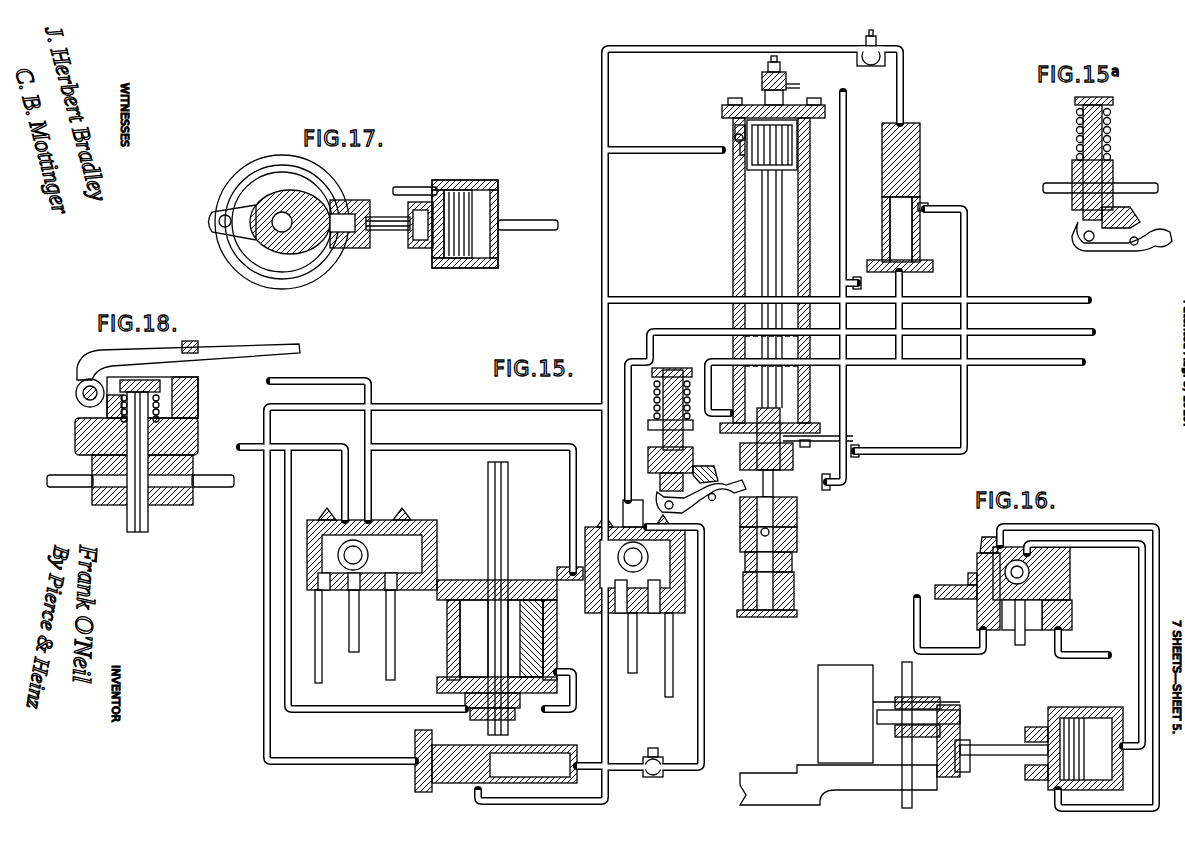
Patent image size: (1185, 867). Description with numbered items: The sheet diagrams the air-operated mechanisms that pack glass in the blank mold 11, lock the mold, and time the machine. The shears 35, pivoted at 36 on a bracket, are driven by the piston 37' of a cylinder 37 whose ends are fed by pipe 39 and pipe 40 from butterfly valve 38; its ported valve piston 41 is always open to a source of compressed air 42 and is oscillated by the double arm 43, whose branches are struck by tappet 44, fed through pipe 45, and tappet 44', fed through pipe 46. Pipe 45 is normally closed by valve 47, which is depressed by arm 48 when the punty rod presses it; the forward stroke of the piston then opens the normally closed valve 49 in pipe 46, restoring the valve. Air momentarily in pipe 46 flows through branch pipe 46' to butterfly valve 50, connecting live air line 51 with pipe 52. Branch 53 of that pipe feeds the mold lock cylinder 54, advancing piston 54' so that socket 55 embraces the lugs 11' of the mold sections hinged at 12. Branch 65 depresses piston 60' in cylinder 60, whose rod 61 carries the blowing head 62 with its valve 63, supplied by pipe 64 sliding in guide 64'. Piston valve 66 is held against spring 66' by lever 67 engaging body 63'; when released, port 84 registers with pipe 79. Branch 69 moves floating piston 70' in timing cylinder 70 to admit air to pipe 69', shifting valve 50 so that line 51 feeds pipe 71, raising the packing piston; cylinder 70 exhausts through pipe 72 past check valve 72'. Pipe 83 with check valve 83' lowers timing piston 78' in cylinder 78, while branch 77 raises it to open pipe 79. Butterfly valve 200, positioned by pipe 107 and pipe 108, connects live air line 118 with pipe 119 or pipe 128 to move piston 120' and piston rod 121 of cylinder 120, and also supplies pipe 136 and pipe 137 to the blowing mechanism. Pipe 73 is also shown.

In FIG. 17, the blank mold 11 is at (282, 221).
In FIG. 17, the lugs 11' is at (348, 232).
In FIG. 17, the hinge 12 is at (210, 222).
In FIG. 16, the shears 35 is at (775, 776).
In FIG. 16, the pivot 36 is at (818, 713).
In FIG. 16, the cylinder 37 is at (1069, 761).
In FIG. 16, the piston 37' is at (1060, 727).
In FIG. 16, the valve 38 is at (1070, 565).
In FIG. 16, the pipe 39 is at (1133, 527).
In FIG. 16, the pipe 40 is at (1134, 619).
In FIG. 16, the ported valve piston 41 is at (977, 561).
In FIG. 16, the source of compressed air 42 is at (1016, 638).
In FIG. 16, the double arm 43 is at (980, 542).
In FIG. 16, the tappet 44 is at (1055, 608).
In FIG. 16, the tappet 44' is at (952, 584).
In FIG. 16, the pipe 45 is at (1108, 657).
In FIG. 18, the pipe 45 is at (62, 478).
In FIG. 16, the pipe 46 is at (950, 624).
In FIG. 15, the branch pipe 46' is at (709, 651).
In FIG. 16, the branch pipe 46' is at (892, 711).
In FIG. 18, the valve 47 is at (150, 405).
In FIG. 18, the arm 48 is at (236, 355).
In FIG. 16, the valve 49 is at (961, 711).
In FIG. 15, the butterfly valve 50 is at (686, 569).
In FIG. 15, the live air line 51 is at (630, 675).
In FIG. 15, the pipe 52 is at (648, 426).
In FIG. 15, the branch 53 is at (706, 296).
In FIG. 17, the branch 53 is at (540, 232).
In FIG. 17, the mold lock cylinder 54 is at (477, 238).
In FIG. 17, the piston 54' is at (437, 255).
In FIG. 17, the socket 55 is at (362, 250).
In FIG. 15, the cylinder 60 is at (757, 239).
In FIG. 15, the piston 60' is at (743, 158).
In FIG. 15, the rod 61 is at (770, 238).
In FIG. 15, the blowing head 62 is at (798, 598).
In FIG. 15, the valve 63 is at (794, 546).
In FIG. 15, the body 63' is at (796, 511).
In FIG. 15, the pipe 64 is at (852, 291).
In FIG. 15, the guide 64' is at (867, 367).
In FIG. 15, the branch 65 is at (664, 152).
In FIG. 15, the piston valve 66 is at (625, 410).
In FIG. 15a, the piston valve 66 is at (1110, 162).
In FIG. 15, the spring 66' is at (684, 376).
In FIG. 15a, the spring 66' is at (1114, 129).
In FIG. 15, the lever 67 is at (707, 509).
In FIG. 15a, the lever 67 is at (1118, 250).
In FIG. 15, the branch 69 is at (436, 572).
In FIG. 15, the pipe 69' is at (645, 669).
In FIG. 15, the cylinder 70 is at (518, 753).
In FIG. 15, the floating piston 70' is at (436, 770).
In FIG. 15, the pipe 71 is at (720, 426).
In FIG. 15, the pipe 72 is at (674, 647).
In FIG. 15, the check valve 72' is at (658, 751).
In FIG. 15, the pipe 73 is at (996, 366).
In FIG. 17, the pipe 73 is at (410, 188).
In FIG. 15, the branch 77 is at (904, 288).
In FIG. 15, the cylinder 78 is at (910, 234).
In FIG. 15, the timing piston 78' is at (922, 160).
In FIG. 15, the pipe 79 is at (968, 241).
In FIG. 15a, the pipe 79 is at (1057, 184).
In FIG. 15, the pipe 83 is at (825, 43).
In FIG. 15, the check valve 83' is at (871, 61).
In FIG. 15, the port 84 is at (648, 458).
In FIG. 15, the pipe 107 is at (322, 684).
In FIG. 15, the pipe 108 is at (395, 665).
In FIG. 15, the live air line 118 is at (355, 653).
In FIG. 15, the pipe 119 is at (472, 441).
In FIG. 15, the cylinder 120 is at (482, 650).
In FIG. 15, the piston 120' is at (554, 638).
In FIG. 15, the piston rod 121 is at (509, 526).
In FIG. 15, the pipe 128 is at (370, 713).
In FIG. 15, the pipe 136 is at (246, 446).
In FIG. 15, the pipe 137 is at (337, 378).
In FIG. 15, the butterfly valve 200 is at (393, 540).